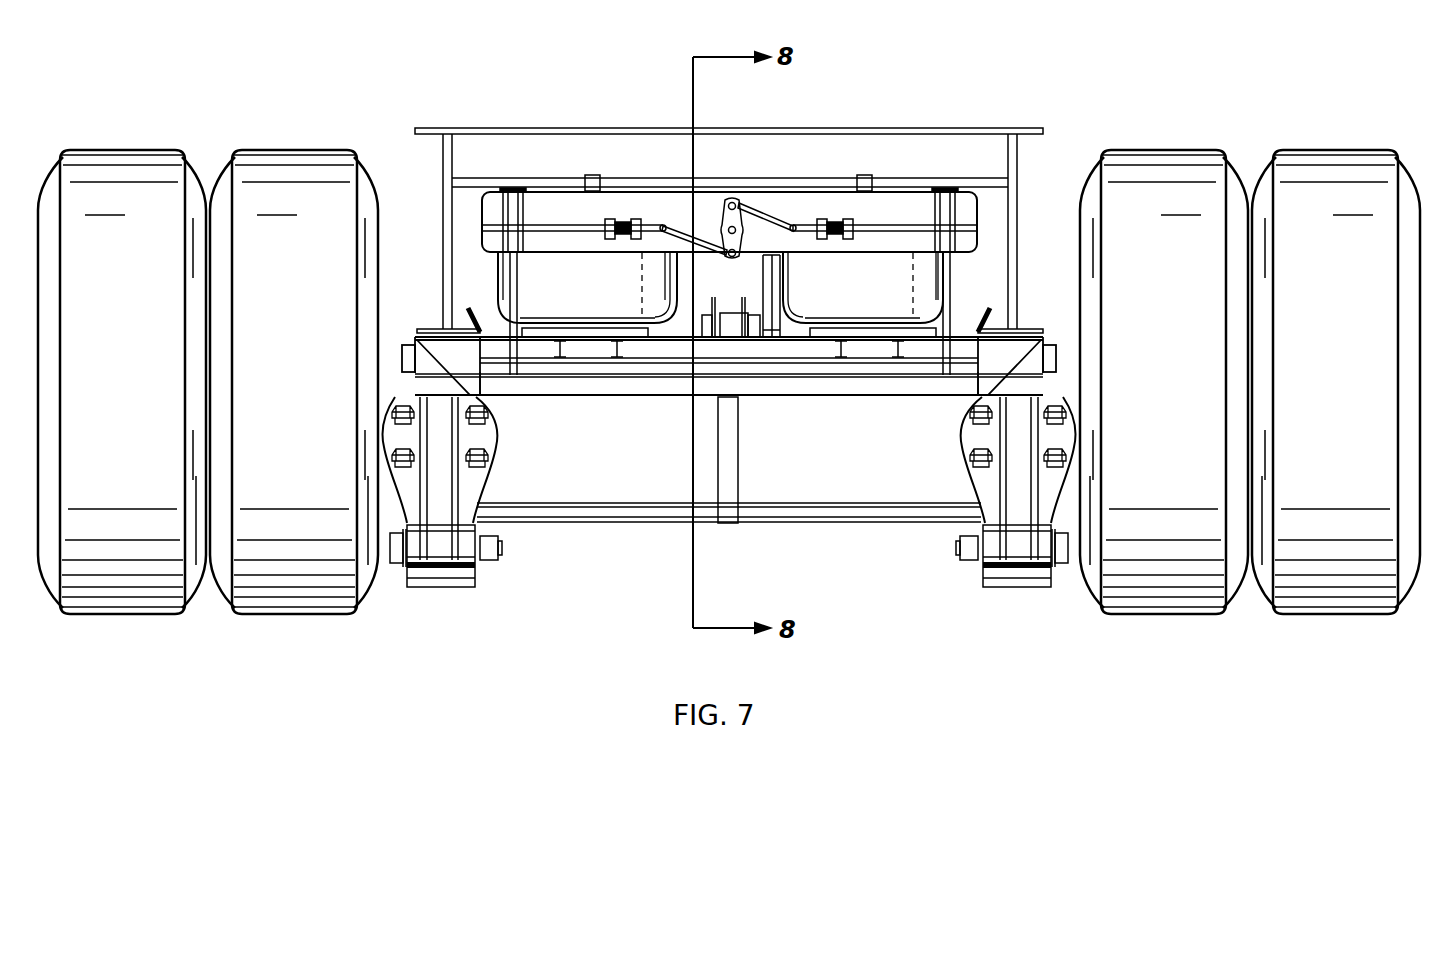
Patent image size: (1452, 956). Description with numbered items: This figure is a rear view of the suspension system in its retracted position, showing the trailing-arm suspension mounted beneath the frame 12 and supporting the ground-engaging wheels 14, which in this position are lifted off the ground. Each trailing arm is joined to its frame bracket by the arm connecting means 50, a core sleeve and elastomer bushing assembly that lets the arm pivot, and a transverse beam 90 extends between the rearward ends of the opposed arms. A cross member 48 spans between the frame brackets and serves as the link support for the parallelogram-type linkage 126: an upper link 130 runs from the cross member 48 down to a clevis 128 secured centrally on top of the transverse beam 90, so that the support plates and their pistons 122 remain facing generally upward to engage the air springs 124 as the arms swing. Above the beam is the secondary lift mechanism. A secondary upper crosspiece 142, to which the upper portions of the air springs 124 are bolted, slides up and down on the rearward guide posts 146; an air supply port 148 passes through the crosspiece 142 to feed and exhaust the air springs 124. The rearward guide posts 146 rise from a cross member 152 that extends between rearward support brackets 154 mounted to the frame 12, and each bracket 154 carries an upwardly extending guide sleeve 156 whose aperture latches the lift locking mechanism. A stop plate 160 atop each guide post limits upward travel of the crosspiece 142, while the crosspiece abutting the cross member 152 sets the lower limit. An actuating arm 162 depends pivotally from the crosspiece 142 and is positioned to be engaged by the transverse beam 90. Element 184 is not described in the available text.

The frame 12 is at (1043, 128).
The ground-engaging wheels 14 is at (301, 375).
The cross member 48 is at (602, 512).
The arm connecting means 50 is at (488, 581).
The transverse beam 90 is at (867, 352).
The piston 122 is at (650, 343).
The air spring 124 is at (676, 325).
The parallelogram-type linkage 126 is at (758, 486).
The clevis 128 is at (713, 297).
The upper link 130 is at (730, 448).
The secondary upper crosspiece 142 is at (903, 213).
The rearward guide posts 146 is at (953, 293).
The air supply port 148 is at (593, 175).
The cross member 152 is at (898, 380).
The rearward support brackets 154 is at (442, 348).
The guide sleeve 156 is at (482, 352).
The stop plate 160 is at (958, 190).
The actuating arm 162 is at (773, 262).
The stop tab 184 is at (477, 308).